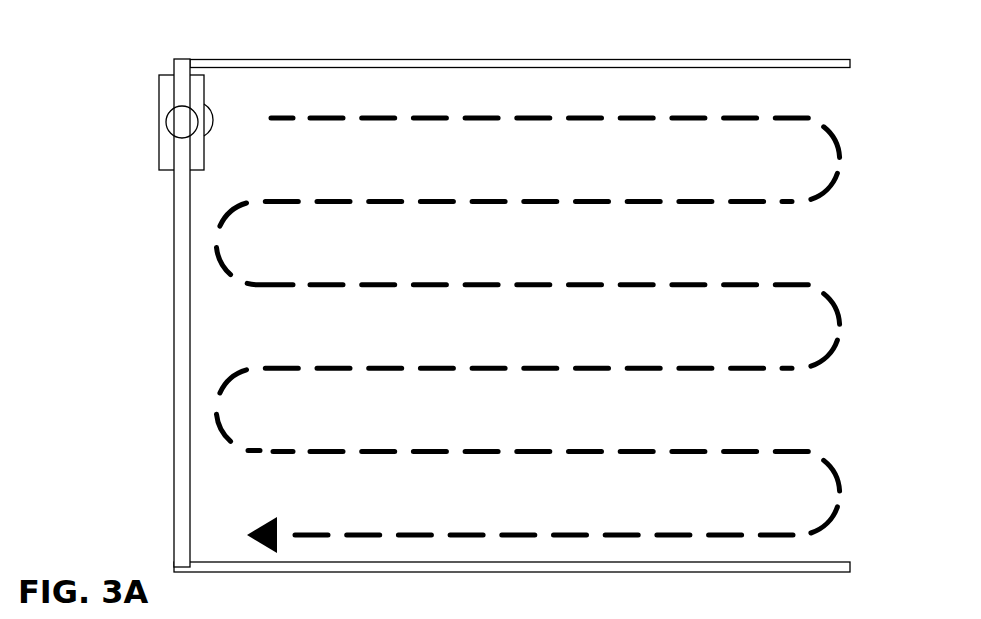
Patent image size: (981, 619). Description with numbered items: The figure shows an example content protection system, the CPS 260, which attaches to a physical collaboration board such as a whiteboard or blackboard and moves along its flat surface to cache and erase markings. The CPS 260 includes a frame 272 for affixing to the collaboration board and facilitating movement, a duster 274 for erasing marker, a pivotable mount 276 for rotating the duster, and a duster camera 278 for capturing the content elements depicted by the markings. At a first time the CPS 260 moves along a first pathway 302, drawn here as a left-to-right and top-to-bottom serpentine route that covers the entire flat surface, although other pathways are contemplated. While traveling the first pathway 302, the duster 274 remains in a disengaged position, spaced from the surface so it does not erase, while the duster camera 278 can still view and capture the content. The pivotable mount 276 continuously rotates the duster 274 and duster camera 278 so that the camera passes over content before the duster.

The CPS 260 is at (85, 76).
The frame 272 is at (187, 285).
The duster 274 is at (162, 160).
The pivotable mount 276 is at (167, 120).
The duster camera 278 is at (207, 125).
The first pathway 302 is at (850, 155).